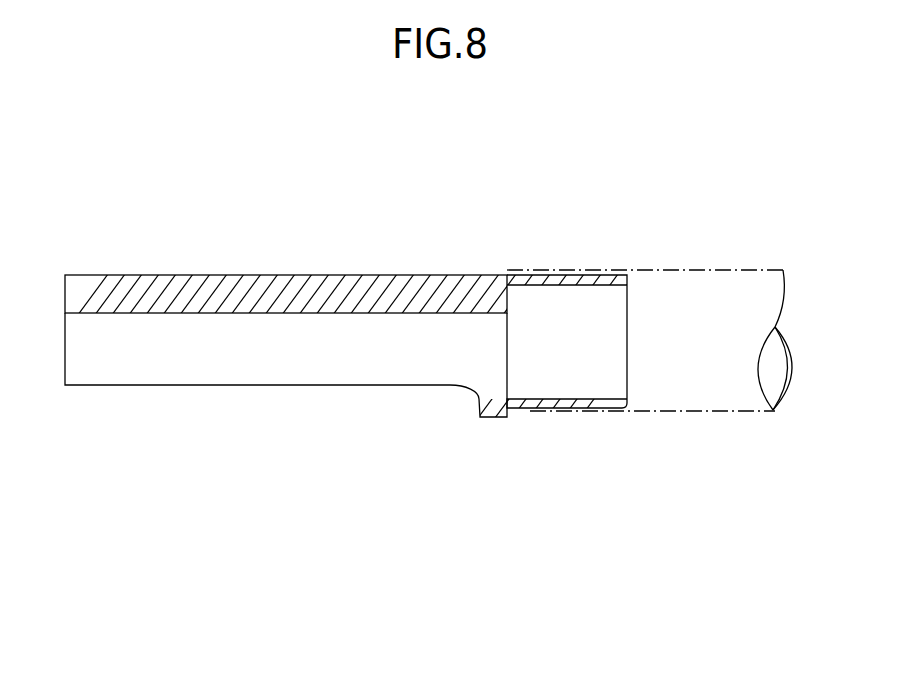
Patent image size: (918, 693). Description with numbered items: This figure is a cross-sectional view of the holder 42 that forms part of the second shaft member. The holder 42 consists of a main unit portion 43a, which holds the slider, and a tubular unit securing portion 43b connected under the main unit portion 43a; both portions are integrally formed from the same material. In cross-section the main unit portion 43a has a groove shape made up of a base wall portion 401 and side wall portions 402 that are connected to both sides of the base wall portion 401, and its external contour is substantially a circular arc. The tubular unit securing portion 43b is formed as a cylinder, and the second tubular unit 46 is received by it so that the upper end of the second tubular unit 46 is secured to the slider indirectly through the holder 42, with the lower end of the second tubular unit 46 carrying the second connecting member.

The holder 42 is at (428, 144).
The main unit portion 43a is at (497, 190).
The tubular unit securing portion 43b is at (540, 273).
The base wall portion 401 is at (482, 287).
The side wall portions 402 is at (408, 350).
The second tubular unit 46 is at (667, 272).